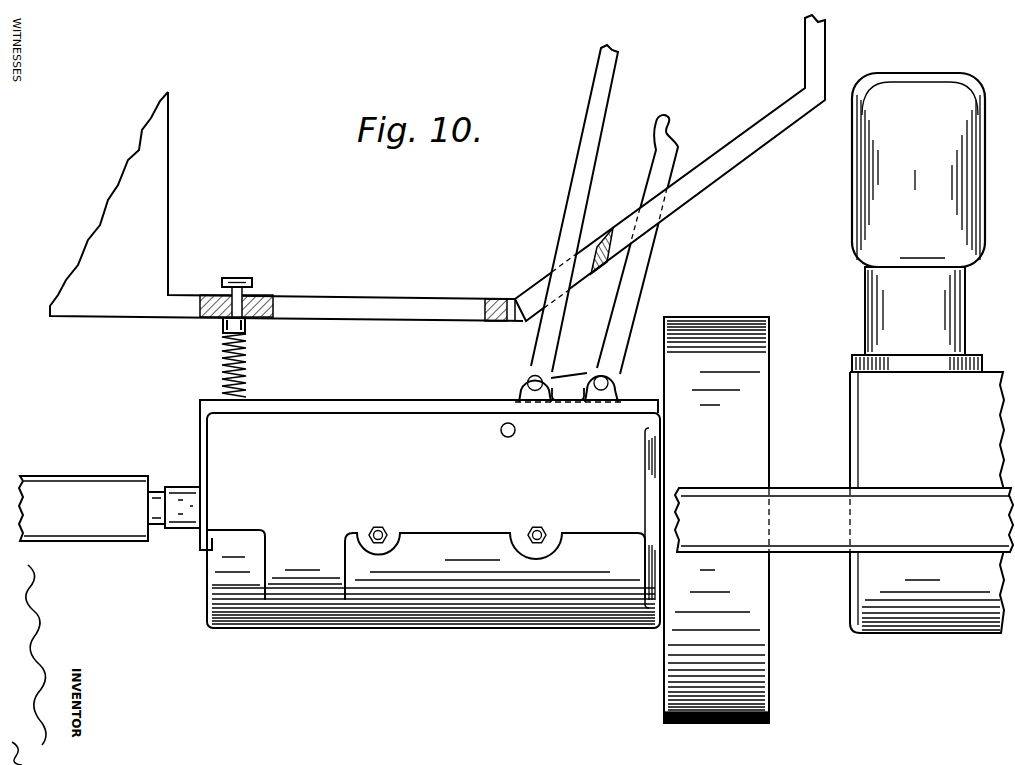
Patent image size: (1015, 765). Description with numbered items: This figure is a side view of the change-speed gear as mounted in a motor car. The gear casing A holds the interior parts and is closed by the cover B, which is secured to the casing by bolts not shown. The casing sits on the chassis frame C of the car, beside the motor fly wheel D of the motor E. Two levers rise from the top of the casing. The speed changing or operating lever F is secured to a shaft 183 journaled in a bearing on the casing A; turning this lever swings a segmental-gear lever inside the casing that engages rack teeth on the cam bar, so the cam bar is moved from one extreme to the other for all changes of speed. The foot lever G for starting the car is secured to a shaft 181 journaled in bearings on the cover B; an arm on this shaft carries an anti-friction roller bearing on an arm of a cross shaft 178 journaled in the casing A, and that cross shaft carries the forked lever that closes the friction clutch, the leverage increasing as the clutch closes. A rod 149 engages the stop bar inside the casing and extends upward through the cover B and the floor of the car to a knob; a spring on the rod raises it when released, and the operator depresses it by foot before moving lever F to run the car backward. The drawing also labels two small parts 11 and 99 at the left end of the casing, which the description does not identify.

The shaft collar 11 is at (155, 495).
The nut 99 is at (186, 530).
The rod 149 is at (253, 288).
The cross shaft 178 is at (502, 434).
The shaft 181 is at (609, 383).
The shaft 183 is at (527, 383).
The gear casing A is at (433, 520).
The cover B is at (380, 402).
The chassis frame C is at (844, 520).
The motor fly wheel D is at (716, 520).
The motor E is at (927, 353).
The speed changing or operating lever F is at (576, 178).
The foot lever G is at (660, 176).